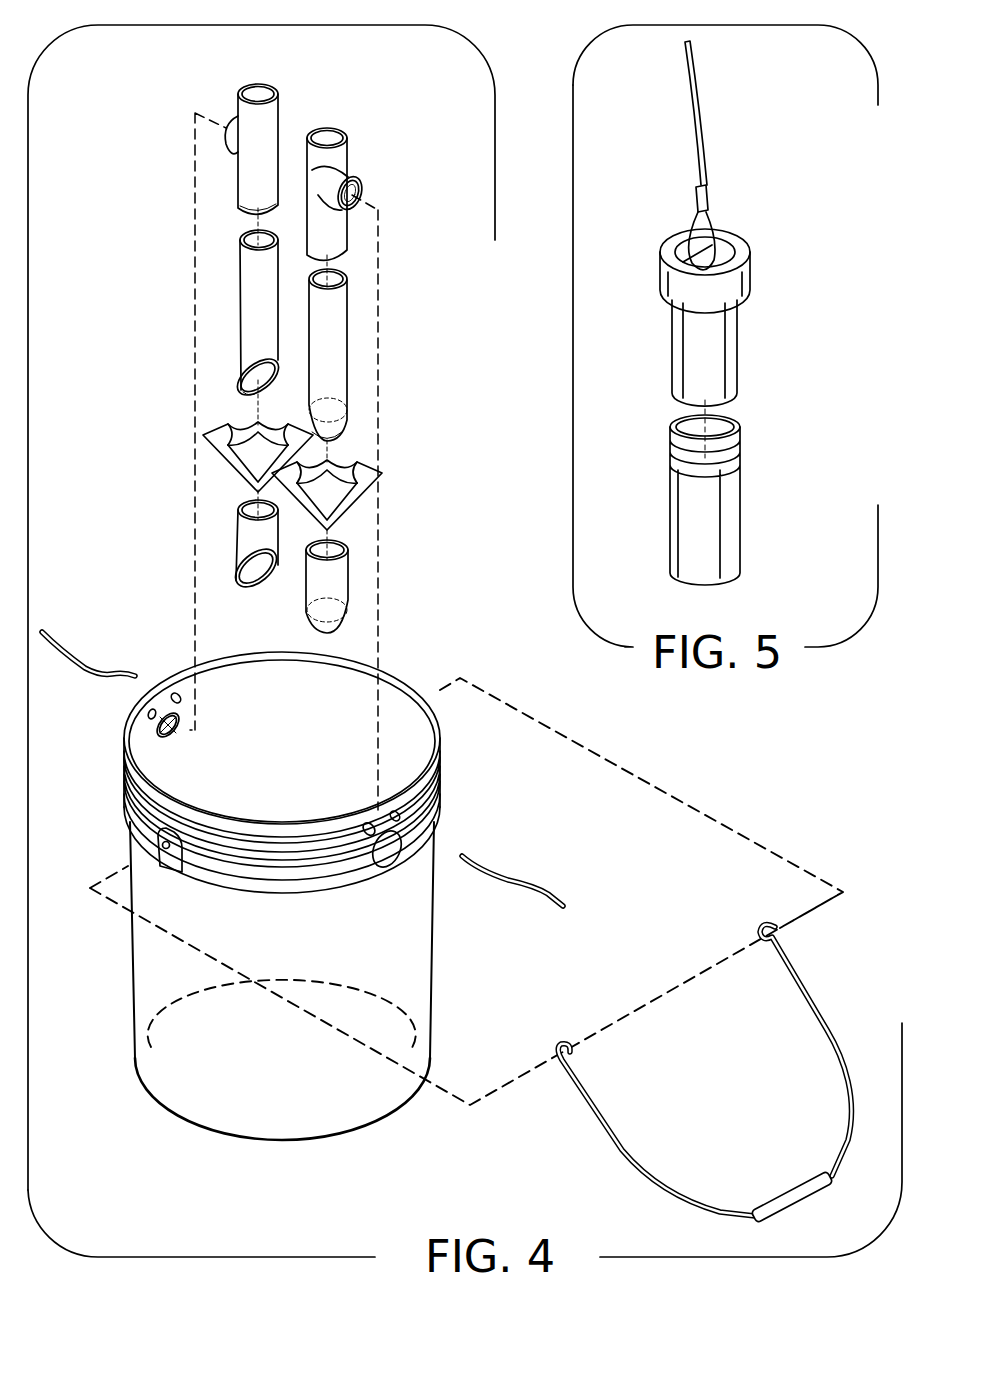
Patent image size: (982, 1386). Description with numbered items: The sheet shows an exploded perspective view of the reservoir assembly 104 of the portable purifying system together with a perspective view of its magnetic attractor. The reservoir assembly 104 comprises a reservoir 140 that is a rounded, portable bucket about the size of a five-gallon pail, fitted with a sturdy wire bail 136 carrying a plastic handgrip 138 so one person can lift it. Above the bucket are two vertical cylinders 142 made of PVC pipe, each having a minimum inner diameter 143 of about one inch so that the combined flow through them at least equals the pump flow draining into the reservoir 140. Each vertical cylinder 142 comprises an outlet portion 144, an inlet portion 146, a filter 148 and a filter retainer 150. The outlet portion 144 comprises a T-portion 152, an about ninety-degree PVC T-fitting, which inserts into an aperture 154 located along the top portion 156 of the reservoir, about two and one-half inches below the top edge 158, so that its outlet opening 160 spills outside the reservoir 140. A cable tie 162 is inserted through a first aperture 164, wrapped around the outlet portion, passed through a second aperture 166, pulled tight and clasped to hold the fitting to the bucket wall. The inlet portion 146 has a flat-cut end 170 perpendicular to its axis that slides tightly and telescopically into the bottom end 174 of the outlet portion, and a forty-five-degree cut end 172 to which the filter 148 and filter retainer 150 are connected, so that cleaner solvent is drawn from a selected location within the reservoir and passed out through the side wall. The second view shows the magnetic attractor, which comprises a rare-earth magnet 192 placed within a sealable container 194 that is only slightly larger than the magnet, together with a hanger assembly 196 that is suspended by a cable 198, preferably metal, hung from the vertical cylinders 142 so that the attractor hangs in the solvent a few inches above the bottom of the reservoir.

In FIG. 4, the reservoir assembly 104 is at (300, 1145).
In FIG. 4, the wire bail 136 is at (612, 1158).
In FIG. 4, the plastic handgrip 138 is at (775, 1210).
In FIG. 4, the reservoir 140 is at (170, 1108).
In FIG. 4, the vertical cylinder 142 is at (175, 286).
In FIG. 4, the inner diameter 143 is at (260, 92).
In FIG. 4, the outlet portion 144 is at (238, 166).
In FIG. 4, the inlet portion 146 is at (240, 258).
In FIG. 4, the filter 148 is at (220, 436).
In FIG. 4, the filter retainer 150 is at (236, 542).
In FIG. 4, the T-portion 152 is at (226, 126).
In FIG. 4, the aperture 154 is at (396, 864).
In FIG. 4, the top portion 156 is at (128, 796).
In FIG. 4, the top edge 158 is at (440, 728).
In FIG. 4, the outlet opening 160 is at (350, 196).
In FIG. 4, the cable tie 162 is at (52, 640).
In FIG. 4, the first aperture 164 is at (368, 824).
In FIG. 4, the second aperture 166 is at (394, 810).
In FIG. 4, the flat-cut end 170 is at (245, 238).
In FIG. 4, the forty-five-degree cut end 172 is at (242, 393).
In FIG. 4, the bottom end 174 is at (240, 208).
In FIG. 5, the magnet 192 is at (738, 345).
In FIG. 5, the sealable container 194 is at (738, 512).
In FIG. 5, the hanger assembly 196 is at (700, 100).
In FIG. 5, the cable 198 is at (712, 164).